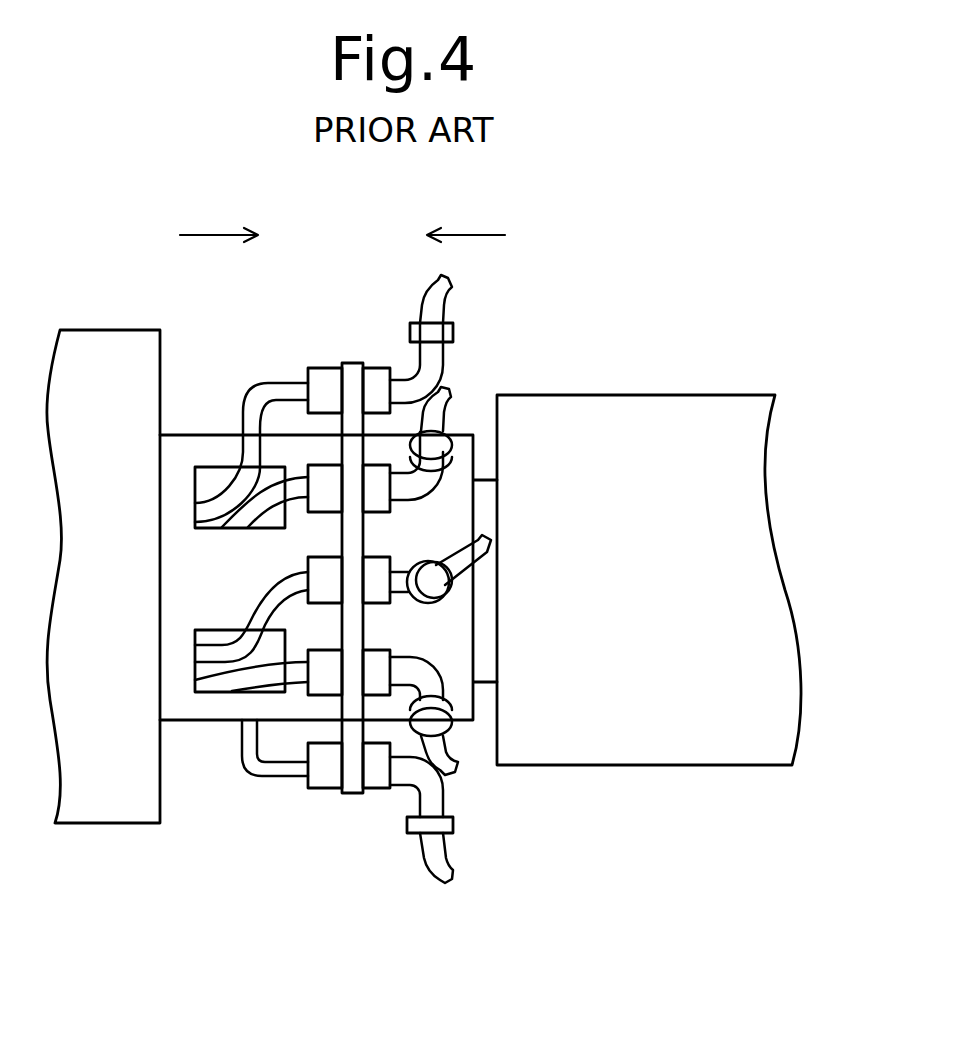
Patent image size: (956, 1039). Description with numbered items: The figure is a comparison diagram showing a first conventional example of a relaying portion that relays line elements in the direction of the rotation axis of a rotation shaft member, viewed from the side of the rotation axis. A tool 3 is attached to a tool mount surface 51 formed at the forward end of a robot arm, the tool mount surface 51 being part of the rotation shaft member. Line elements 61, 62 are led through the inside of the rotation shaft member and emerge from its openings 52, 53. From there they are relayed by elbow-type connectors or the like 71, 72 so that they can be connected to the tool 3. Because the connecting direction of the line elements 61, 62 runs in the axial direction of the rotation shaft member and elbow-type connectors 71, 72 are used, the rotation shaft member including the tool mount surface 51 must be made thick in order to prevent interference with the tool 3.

The tool 3 is at (762, 557).
The tool mount surface 51 is at (503, 650).
The opening 52 is at (212, 680).
The opening 53 is at (208, 480).
The line element 61 is at (272, 395).
The line element 62 is at (282, 763).
The elbow-type connector 71 is at (403, 797).
The elbow-type connector 72 is at (432, 355).